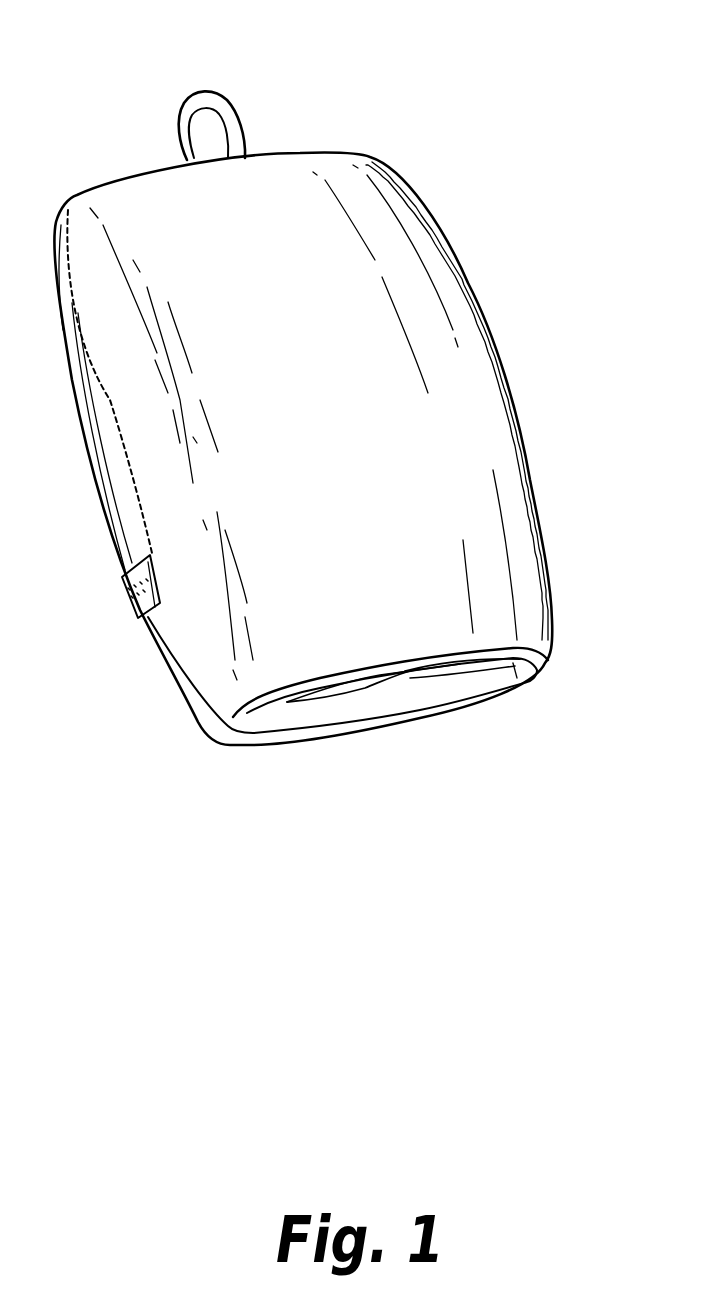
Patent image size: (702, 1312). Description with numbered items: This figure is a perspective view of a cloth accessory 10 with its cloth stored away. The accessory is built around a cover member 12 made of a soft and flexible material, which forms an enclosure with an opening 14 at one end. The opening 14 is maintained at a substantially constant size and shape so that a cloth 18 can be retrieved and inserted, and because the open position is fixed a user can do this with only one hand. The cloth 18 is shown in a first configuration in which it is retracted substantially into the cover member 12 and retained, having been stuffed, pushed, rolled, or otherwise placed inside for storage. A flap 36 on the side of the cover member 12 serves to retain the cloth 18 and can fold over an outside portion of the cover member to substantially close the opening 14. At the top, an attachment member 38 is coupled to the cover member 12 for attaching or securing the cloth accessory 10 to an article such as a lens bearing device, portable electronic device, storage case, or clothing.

The cloth accessory 10 is at (394, 111).
The cover member 12 is at (461, 263).
The opening 14 is at (283, 704).
The cloth 18 is at (393, 680).
The flap 36 is at (150, 632).
The attachment member 38 is at (222, 92).